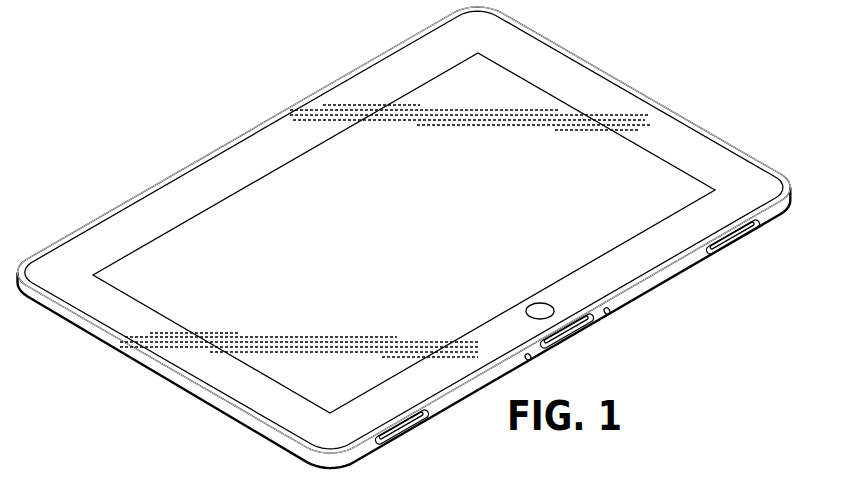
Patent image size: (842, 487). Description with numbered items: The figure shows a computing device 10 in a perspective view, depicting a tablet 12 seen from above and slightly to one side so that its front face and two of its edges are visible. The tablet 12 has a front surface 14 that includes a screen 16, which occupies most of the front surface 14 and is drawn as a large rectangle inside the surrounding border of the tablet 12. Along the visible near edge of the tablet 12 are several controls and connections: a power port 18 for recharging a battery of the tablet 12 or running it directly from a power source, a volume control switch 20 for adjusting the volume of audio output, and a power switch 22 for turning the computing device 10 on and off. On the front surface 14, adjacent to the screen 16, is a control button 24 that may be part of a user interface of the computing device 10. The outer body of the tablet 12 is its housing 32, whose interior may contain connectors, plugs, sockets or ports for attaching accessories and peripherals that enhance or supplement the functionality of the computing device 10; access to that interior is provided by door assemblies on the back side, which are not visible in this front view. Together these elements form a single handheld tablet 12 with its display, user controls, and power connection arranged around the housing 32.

The computing device 10 is at (237, 98).
The tablet 12 is at (593, 94).
The front surface 14 is at (385, 76).
The screen 16 is at (402, 236).
The power port 18 is at (401, 430).
The volume control switch 20 is at (570, 329).
The power switch 22 is at (724, 241).
The control button 24 is at (540, 303).
The housing 32 is at (99, 347).